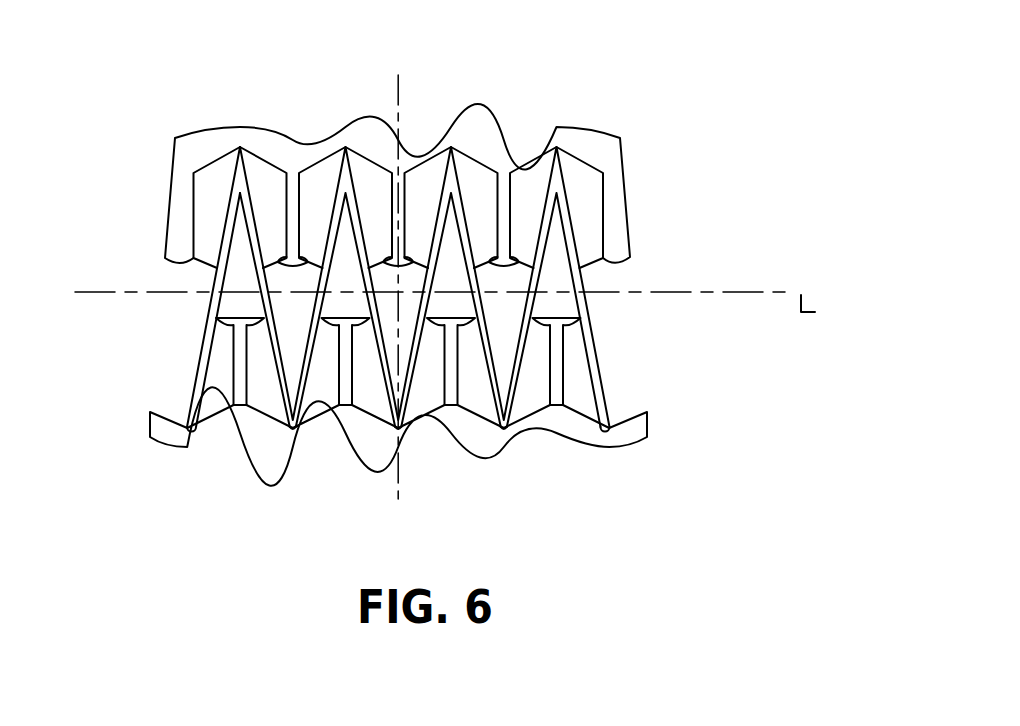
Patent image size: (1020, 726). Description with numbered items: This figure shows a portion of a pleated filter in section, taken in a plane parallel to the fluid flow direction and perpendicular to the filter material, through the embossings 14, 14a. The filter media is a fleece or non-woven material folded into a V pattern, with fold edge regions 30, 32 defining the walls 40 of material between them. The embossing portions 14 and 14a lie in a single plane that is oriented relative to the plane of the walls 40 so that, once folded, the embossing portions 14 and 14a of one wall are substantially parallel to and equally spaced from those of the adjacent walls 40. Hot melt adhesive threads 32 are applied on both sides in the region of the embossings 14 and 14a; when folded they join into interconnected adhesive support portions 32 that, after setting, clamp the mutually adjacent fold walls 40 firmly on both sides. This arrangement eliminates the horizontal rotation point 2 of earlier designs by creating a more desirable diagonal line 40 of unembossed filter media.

The rotation point 2 is at (431, 293).
The embossing portion 14 is at (267, 173).
The embossing portion 14a is at (265, 405).
The fold edge region 30 is at (419, 296).
The hot melt adhesive thread 32 is at (249, 146).
The wall 40 is at (187, 428).